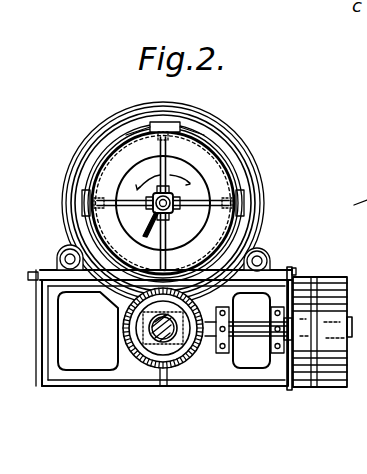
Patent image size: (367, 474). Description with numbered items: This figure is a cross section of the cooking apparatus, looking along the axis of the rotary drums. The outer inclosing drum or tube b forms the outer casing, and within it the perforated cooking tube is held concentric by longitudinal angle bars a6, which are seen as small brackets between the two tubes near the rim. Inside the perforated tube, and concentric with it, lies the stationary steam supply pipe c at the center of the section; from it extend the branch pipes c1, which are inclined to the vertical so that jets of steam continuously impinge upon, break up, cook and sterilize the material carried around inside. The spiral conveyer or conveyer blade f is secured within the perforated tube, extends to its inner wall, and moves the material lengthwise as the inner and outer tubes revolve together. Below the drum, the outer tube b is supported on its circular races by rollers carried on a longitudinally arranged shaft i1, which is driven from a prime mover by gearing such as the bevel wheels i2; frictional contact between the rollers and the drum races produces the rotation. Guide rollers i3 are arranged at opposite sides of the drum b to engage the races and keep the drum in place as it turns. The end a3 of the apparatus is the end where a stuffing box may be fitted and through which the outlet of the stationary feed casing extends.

The end of the apparatus a3 is at (355, 211).
The longitudinal angle bars a6 is at (183, 133).
The outer inclosing drum or tube b is at (238, 165).
The stationary steam supply pipe c is at (176, 198).
The branch pipes c1 is at (84, 212).
The spiral conveyer or conveyer blade f is at (92, 156).
The longitudinally arranged shaft i1 is at (128, 328).
The bevel wheels i2 is at (214, 342).
The guide rollers i3 is at (58, 252).